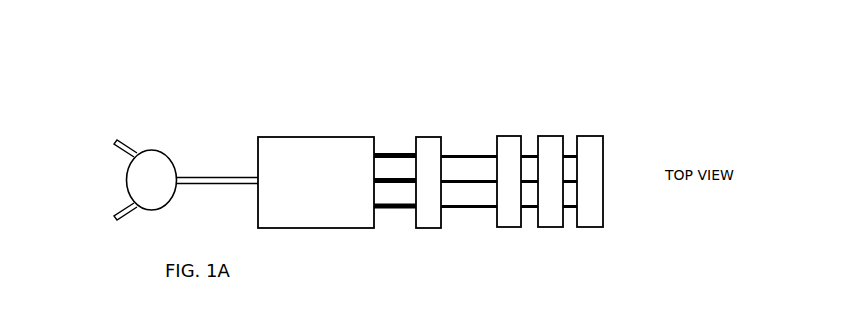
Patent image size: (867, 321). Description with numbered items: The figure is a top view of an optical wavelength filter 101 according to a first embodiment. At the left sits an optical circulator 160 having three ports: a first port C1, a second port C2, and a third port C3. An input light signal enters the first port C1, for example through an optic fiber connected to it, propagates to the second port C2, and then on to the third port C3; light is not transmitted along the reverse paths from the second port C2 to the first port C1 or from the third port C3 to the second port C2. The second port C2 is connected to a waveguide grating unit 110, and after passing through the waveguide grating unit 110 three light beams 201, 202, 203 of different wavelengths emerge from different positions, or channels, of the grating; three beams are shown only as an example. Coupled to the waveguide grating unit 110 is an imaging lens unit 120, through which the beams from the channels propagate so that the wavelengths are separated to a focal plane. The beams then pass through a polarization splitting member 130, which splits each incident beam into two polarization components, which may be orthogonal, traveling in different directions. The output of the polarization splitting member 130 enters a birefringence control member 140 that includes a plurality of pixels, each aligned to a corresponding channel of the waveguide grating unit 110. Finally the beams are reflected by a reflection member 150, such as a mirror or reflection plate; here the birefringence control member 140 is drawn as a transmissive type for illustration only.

The optical wavelength filter 101 is at (122, 70).
The waveguide grating unit 110 is at (340, 140).
The imaging lens unit 120 is at (432, 143).
The polarization splitting member 130 is at (507, 143).
The birefringence control member 140 is at (553, 143).
The reflection member 150 is at (590, 143).
The optical circulator 160 is at (160, 165).
The light beam 201 is at (458, 212).
The light beam 202 is at (471, 187).
The light beam 203 is at (481, 160).
The first port C1 is at (128, 144).
The second port C2 is at (217, 171).
The third port C3 is at (127, 218).